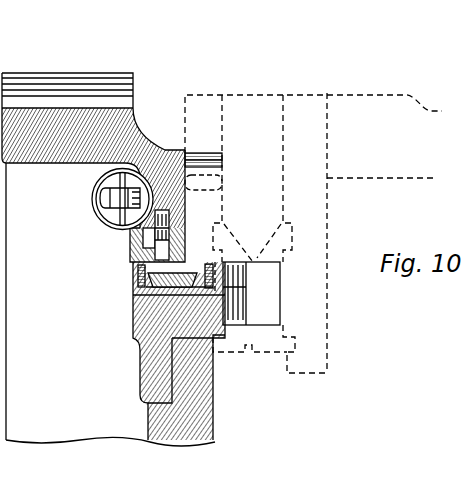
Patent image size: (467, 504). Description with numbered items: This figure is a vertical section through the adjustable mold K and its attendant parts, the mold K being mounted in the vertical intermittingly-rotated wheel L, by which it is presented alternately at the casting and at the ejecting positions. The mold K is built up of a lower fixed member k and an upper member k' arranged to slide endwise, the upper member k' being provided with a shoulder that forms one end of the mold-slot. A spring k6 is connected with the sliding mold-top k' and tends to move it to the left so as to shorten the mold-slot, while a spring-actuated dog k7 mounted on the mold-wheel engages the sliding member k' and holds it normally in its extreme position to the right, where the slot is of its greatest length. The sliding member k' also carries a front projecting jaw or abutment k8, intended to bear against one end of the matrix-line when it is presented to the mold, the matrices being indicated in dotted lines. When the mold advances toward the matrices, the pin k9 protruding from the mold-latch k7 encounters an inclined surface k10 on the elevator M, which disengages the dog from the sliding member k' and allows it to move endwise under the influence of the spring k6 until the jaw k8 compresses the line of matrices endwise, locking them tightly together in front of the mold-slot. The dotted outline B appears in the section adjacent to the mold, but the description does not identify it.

The wheel L is at (108, 246).
The mold K is at (122, 321).
The lower fixed member k is at (155, 351).
The upper member k' is at (139, 206).
The spring k6 is at (107, 199).
The spring-actuated dog k7 is at (165, 238).
The jaw k8 is at (252, 308).
The pin k9 is at (218, 160).
The inclined surface k10 is at (188, 153).
The elevator M is at (313, 233).
The bracket B is at (268, 343).